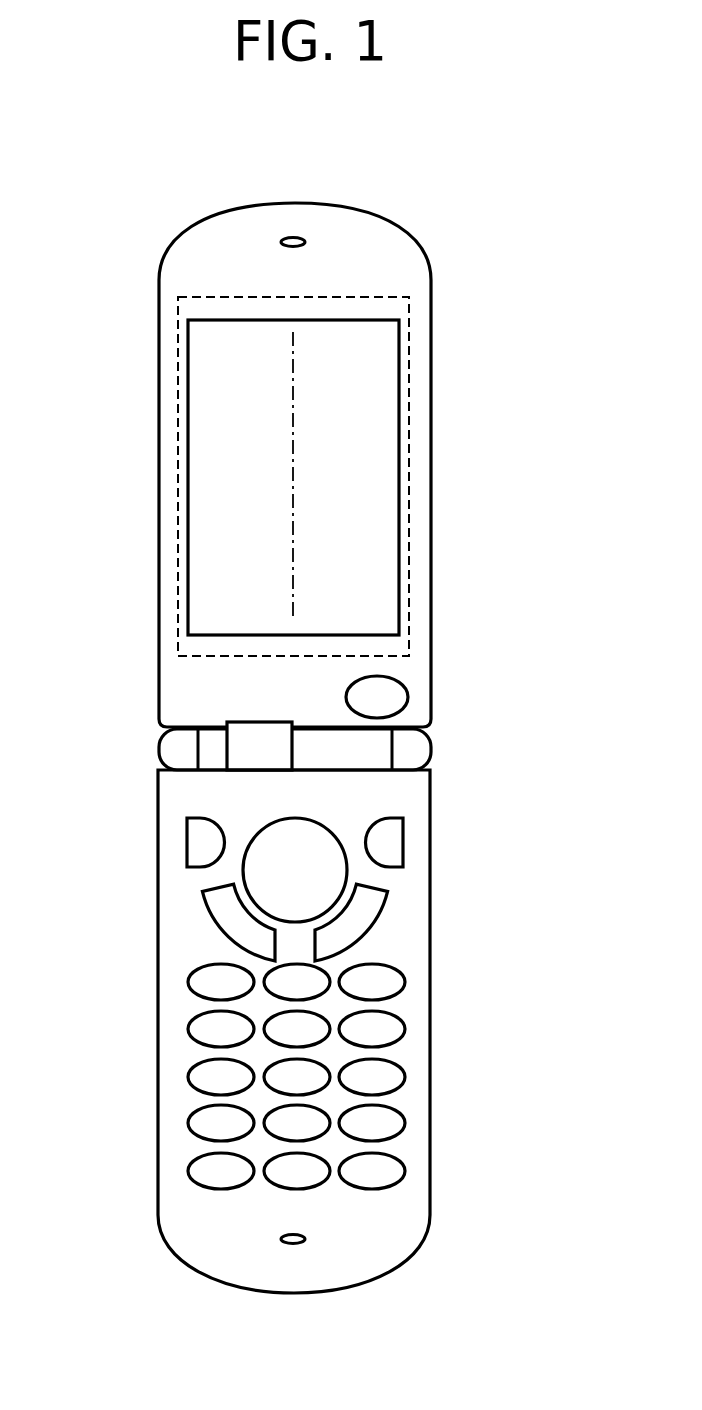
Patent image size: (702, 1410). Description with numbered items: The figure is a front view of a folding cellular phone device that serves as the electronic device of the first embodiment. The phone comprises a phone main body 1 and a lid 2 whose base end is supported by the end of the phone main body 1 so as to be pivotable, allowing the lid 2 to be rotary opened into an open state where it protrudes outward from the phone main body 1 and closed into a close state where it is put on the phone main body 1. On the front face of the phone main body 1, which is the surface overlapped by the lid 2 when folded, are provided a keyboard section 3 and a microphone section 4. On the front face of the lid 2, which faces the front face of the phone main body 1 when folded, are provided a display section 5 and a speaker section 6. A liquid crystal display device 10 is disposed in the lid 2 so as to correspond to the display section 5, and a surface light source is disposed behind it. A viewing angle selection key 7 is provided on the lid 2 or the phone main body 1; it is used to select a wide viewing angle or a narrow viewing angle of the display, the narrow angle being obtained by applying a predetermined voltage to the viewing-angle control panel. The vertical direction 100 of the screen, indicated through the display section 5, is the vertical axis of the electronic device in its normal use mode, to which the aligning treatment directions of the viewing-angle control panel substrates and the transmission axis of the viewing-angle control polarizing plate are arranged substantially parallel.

The phone main body 1 is at (158, 1015).
The lid 2 is at (160, 467).
The keyboard section 3 is at (392, 953).
The microphone section 4 is at (290, 1245).
The display section 5 is at (223, 397).
The speaker section 6 is at (293, 237).
The viewing angle selection key 7 is at (395, 693).
The liquid crystal display device 10 is at (373, 289).
The vertical direction 100 is at (293, 458).